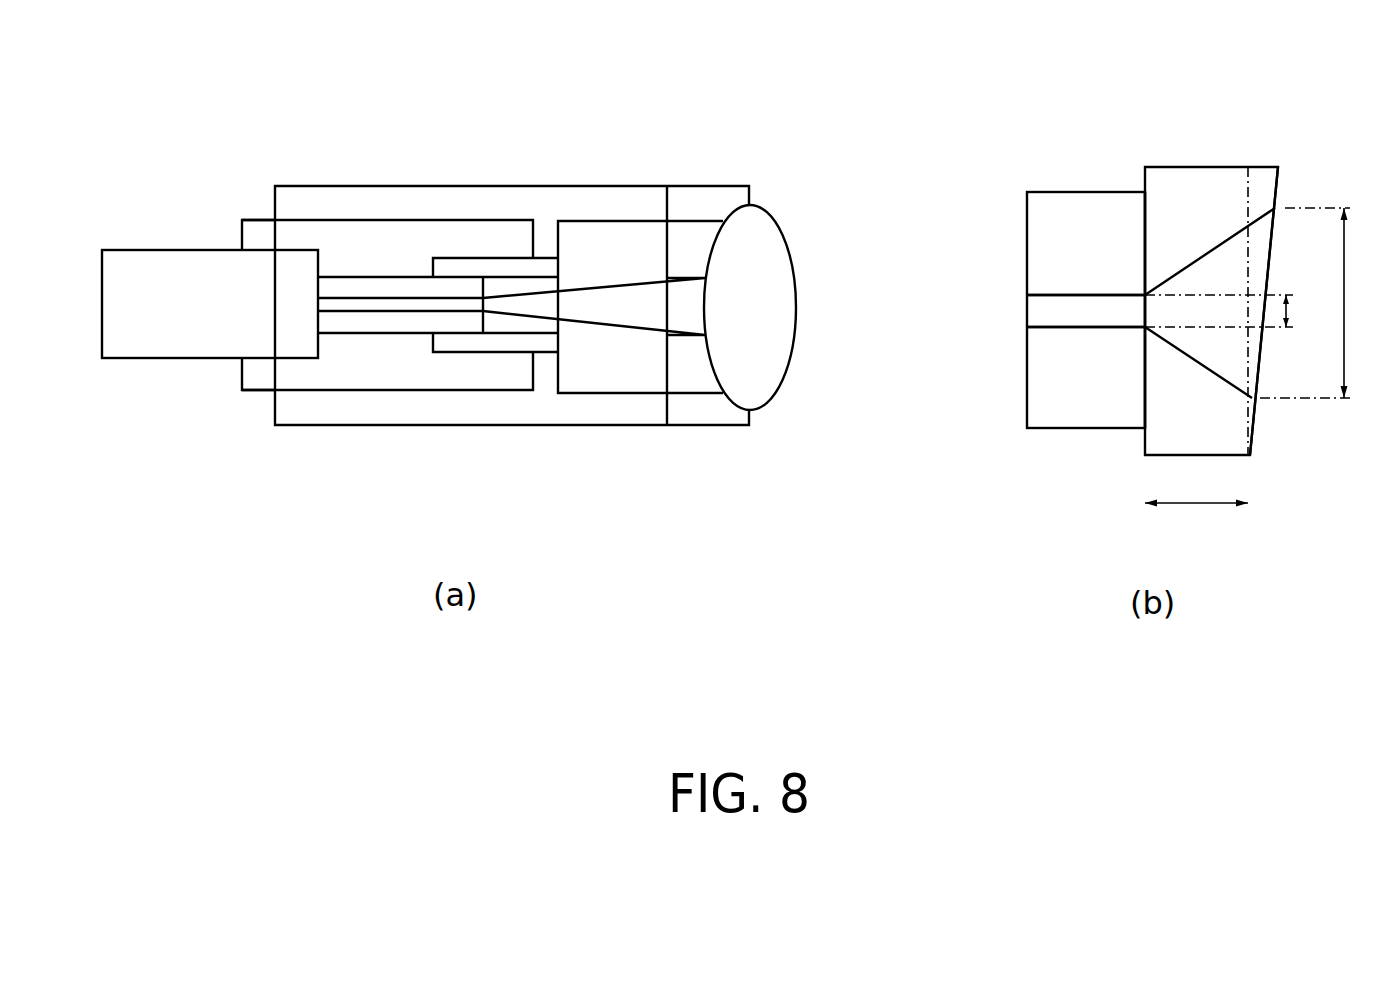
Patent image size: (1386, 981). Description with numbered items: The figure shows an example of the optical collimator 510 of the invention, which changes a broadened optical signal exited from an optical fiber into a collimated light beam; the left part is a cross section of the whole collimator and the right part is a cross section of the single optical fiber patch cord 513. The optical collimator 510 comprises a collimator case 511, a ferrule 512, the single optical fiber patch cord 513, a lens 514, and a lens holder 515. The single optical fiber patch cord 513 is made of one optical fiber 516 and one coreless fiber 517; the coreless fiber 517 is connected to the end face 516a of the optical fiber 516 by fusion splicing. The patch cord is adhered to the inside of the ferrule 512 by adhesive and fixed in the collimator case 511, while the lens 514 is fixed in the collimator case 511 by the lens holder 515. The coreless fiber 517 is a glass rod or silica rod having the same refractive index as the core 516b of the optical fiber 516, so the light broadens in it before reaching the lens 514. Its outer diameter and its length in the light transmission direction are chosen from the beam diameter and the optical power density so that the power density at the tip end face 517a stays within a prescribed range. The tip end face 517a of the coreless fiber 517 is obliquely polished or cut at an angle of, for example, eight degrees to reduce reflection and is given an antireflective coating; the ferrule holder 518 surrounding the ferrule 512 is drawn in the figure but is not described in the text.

The optical fiber collimator assembly 510 is at (733, 146).
The outer housing 511 is at (503, 198).
The fiber holding sleeve 512 is at (327, 370).
The fiber end portion 513 is at (1242, 142).
The lens 514 is at (780, 233).
The lens holder 515 is at (717, 425).
The ferrule 516 is at (463, 337).
The ferrule end face 516a is at (1143, 398).
The fiber insertion hole 516b is at (1043, 328).
The tapered glass block 517 is at (520, 340).
The inclined end face 517a is at (1273, 252).
The ferrule holder 518 is at (548, 343).